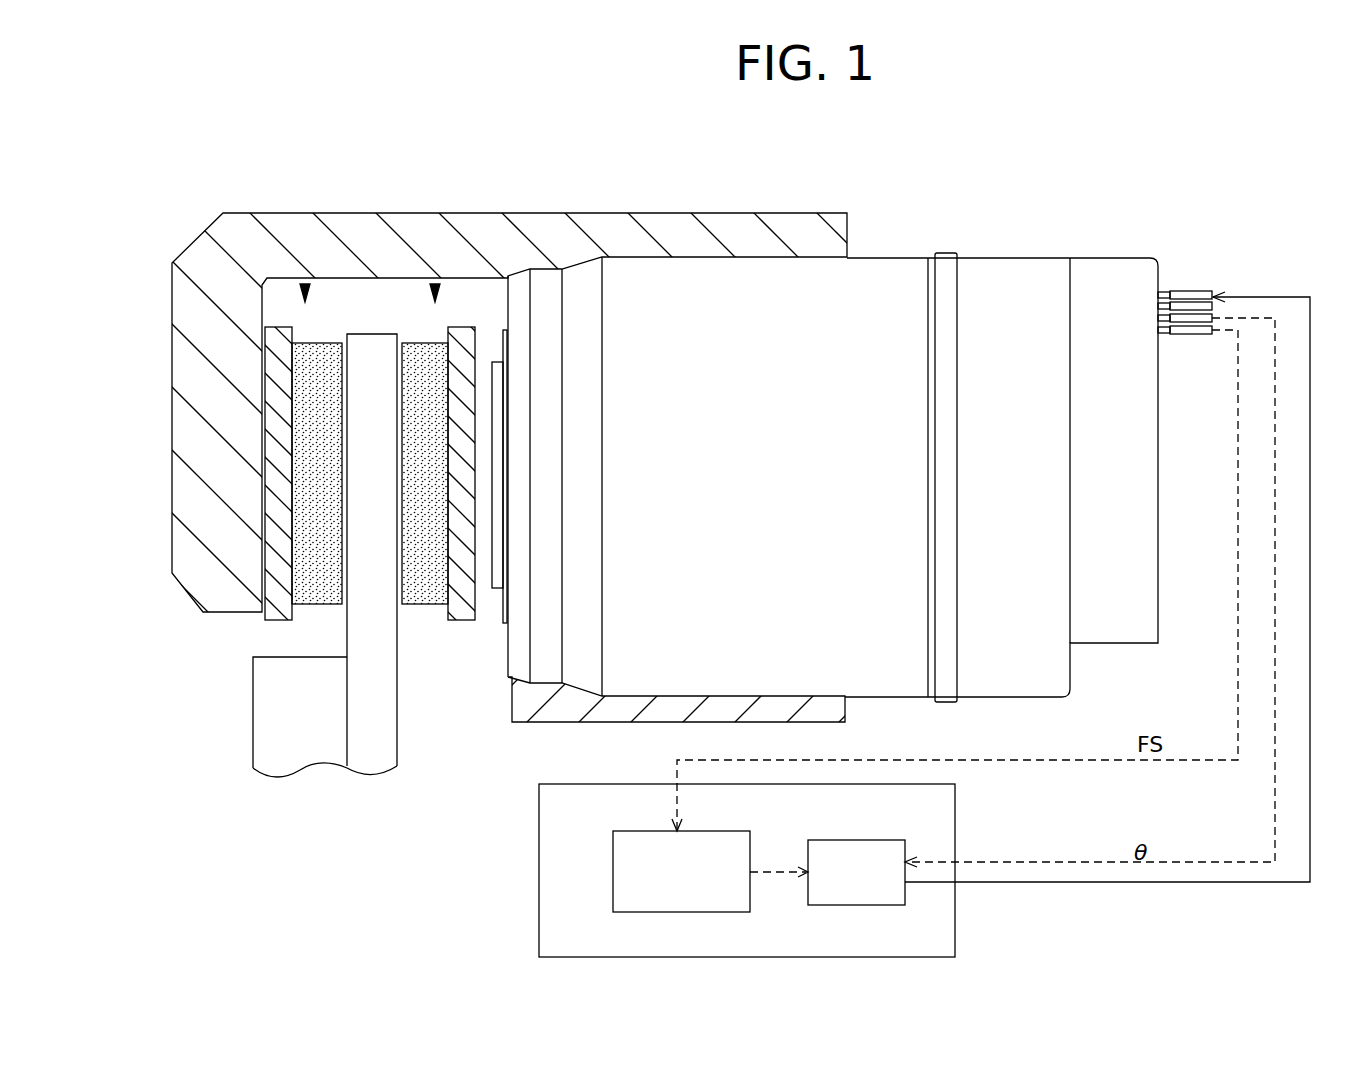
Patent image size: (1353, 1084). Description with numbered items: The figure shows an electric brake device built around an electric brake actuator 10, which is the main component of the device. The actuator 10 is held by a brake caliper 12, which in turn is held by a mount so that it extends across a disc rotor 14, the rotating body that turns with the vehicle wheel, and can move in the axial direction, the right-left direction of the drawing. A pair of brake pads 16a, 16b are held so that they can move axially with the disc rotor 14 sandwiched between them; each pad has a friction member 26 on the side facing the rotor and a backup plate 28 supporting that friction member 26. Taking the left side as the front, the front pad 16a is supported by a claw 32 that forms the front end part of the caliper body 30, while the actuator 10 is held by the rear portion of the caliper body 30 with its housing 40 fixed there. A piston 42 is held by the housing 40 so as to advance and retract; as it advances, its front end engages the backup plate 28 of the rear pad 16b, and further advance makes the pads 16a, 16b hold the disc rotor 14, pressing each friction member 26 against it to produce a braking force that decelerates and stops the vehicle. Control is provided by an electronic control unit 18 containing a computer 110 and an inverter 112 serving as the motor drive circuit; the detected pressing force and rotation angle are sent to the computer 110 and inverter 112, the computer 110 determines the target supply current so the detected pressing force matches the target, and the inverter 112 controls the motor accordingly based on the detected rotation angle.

The electric brake actuator 10 is at (953, 201).
The brake caliper 12 is at (536, 138).
The disc rotor 14 is at (263, 699).
The front brake pad 16a is at (302, 288).
The rear brake pad 16b is at (436, 288).
The electronic control unit 18 is at (567, 785).
The friction member 26 is at (322, 343).
The backup plate 28 is at (276, 327).
The caliper body 30 is at (553, 213).
The claw 32 is at (190, 505).
The housing 40 is at (872, 278).
The piston 42 is at (497, 590).
The computer 110 is at (643, 912).
The inverter 112 is at (876, 897).